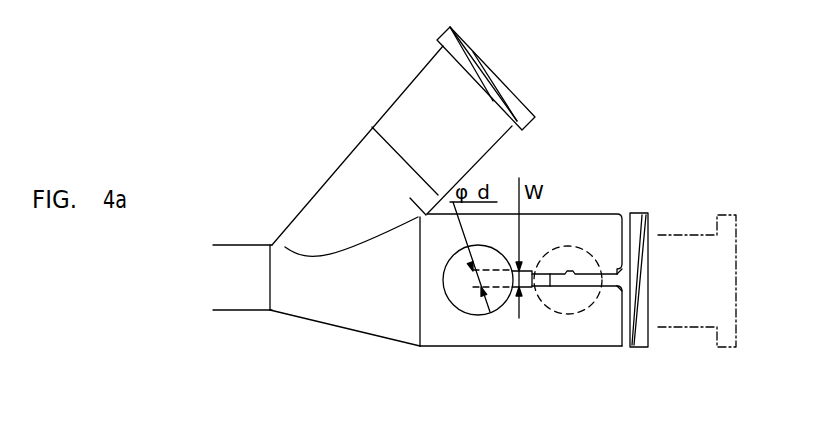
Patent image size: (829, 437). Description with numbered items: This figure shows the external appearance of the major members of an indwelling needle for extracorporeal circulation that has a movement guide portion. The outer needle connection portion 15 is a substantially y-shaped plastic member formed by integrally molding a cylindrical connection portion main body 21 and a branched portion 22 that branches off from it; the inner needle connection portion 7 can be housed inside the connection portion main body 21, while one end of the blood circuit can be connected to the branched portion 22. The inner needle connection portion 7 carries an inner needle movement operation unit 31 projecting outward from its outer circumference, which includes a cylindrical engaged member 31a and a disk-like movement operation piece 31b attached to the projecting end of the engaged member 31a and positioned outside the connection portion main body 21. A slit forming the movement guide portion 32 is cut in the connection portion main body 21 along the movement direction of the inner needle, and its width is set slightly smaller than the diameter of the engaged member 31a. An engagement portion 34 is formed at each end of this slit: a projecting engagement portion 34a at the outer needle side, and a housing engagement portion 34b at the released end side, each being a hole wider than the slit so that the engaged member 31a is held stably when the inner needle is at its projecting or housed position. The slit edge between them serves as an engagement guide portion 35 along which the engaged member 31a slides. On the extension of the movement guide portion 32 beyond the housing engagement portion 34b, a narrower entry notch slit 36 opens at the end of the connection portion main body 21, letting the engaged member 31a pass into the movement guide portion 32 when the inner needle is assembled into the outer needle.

The outer needle connection portion 15 is at (417, 217).
The branched portion 22 is at (388, 122).
The connection portion main body 21 is at (410, 332).
The inner needle connection portion 7 is at (670, 246).
The entry notch slit 36 is at (622, 285).
The engagement guide portion 35 is at (551, 300).
The movement guide portion 32 is at (550, 273).
The inner needle movement operation unit 31 is at (477, 322).
The engaged member 31a is at (361, 326).
The movement operation piece 31b is at (484, 311).
The engagement portion 34 is at (495, 326).
The projecting engagement portion 34a is at (361, 326).
The housing engagement portion 34b is at (567, 286).